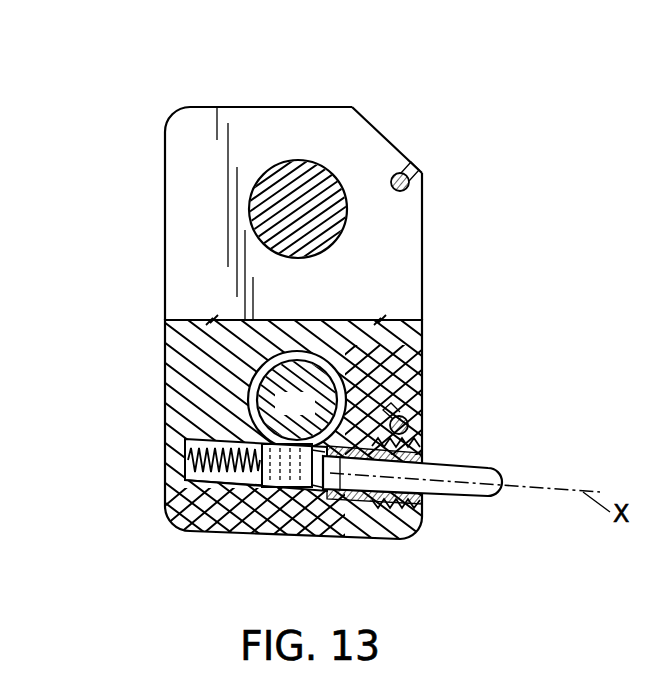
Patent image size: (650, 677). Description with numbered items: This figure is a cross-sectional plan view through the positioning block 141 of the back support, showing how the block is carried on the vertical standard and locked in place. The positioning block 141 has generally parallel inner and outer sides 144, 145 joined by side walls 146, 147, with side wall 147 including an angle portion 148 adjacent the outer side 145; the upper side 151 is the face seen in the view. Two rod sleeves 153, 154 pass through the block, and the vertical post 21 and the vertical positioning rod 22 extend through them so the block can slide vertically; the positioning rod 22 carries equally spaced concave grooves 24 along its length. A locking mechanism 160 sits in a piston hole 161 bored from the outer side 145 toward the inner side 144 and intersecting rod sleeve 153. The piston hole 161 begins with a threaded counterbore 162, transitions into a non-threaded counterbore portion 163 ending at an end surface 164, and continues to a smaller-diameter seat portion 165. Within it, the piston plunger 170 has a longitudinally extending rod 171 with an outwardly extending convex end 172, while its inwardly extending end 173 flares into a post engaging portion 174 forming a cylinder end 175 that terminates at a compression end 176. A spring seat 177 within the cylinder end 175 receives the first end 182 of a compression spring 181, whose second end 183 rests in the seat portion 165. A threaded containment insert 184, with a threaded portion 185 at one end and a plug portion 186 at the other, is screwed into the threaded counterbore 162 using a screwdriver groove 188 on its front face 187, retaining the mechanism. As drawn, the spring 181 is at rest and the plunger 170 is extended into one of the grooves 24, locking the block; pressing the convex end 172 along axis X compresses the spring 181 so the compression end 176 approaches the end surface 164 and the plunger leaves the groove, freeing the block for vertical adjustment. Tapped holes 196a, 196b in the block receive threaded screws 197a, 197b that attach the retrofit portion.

The vertical post 21 is at (287, 167).
The vertical positioning rod 22 is at (277, 362).
The concave grooves 24 is at (299, 358).
The positioning block 141 is at (143, 175).
The inner side 144 is at (165, 213).
The outer side 145 is at (423, 203).
The side wall 146 is at (233, 528).
The side wall 147 is at (232, 107).
The angle portion 148 is at (367, 118).
The upper side 151 is at (195, 122).
The rod sleeve 153 is at (323, 355).
The rod sleeve 154 is at (297, 160).
The locking mechanism 160 is at (520, 527).
The piston hole 161 is at (190, 523).
The threaded counterbore 162 is at (418, 450).
The counterbore portion 163 is at (307, 487).
The end surface 164 is at (200, 440).
The seat portion 165 is at (163, 490).
The piston plunger 170 is at (440, 513).
The longitudinally extending rod 171 is at (455, 495).
The outwardly extending convex end 172 is at (488, 493).
The inwardly extending end 173 is at (427, 350).
The post engaging portion 174 is at (297, 497).
The cylinder end 175 is at (267, 497).
The compression end 176 is at (215, 525).
The spring seat 177 is at (280, 530).
The compression spring 181 is at (180, 505).
The first end 182 is at (297, 401).
The second end 183 is at (180, 458).
The threaded containment insert 184 is at (395, 510).
The threaded portion 185 is at (373, 495).
The plug portion 186 is at (422, 384).
The front face 187 is at (422, 458).
The screwdriver groove 188 is at (495, 470).
The tapped hole 196a is at (408, 422).
The tapped hole 196b is at (418, 173).
The threaded screw 197a is at (412, 432).
The threaded screw 197b is at (405, 163).